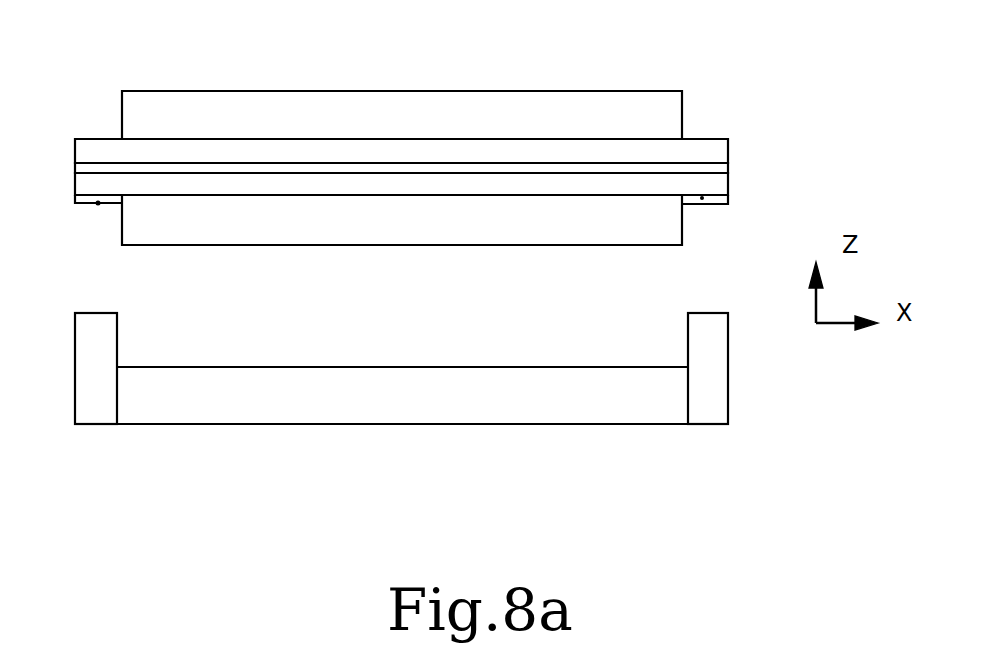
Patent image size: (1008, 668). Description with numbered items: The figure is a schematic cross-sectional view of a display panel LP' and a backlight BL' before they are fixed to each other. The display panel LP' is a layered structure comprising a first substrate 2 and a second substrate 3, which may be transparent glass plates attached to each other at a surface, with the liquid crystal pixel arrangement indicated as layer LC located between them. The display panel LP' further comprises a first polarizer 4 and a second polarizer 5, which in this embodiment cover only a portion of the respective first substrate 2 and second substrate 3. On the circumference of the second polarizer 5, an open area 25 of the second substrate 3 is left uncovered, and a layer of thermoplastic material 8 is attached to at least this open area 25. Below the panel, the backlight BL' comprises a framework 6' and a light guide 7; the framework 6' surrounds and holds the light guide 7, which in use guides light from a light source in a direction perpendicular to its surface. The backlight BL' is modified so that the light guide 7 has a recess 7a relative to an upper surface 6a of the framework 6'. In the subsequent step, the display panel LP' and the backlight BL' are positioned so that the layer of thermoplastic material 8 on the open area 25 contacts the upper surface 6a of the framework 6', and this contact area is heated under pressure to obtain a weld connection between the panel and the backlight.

The first substrate 2 is at (708, 151).
The liquid crystal pixel arrangement layer LC is at (712, 167).
The second substrate 3 is at (708, 183).
The first polarizer 4 is at (402, 115).
The second polarizer 5 is at (402, 220).
The layer of thermoplastic material 8 is at (98, 203).
The open area 25 is at (92, 196).
The display panel LP' is at (715, 31).
The framework 6' is at (401, 368).
The upper surface 6a is at (87, 312).
The light guide 7 is at (402, 395).
The recess 7a is at (370, 367).
The backlight BL' is at (706, 461).